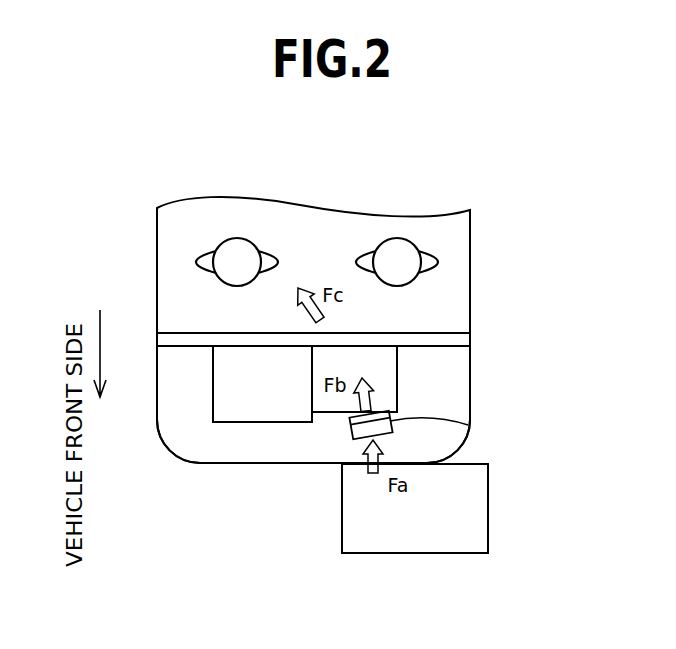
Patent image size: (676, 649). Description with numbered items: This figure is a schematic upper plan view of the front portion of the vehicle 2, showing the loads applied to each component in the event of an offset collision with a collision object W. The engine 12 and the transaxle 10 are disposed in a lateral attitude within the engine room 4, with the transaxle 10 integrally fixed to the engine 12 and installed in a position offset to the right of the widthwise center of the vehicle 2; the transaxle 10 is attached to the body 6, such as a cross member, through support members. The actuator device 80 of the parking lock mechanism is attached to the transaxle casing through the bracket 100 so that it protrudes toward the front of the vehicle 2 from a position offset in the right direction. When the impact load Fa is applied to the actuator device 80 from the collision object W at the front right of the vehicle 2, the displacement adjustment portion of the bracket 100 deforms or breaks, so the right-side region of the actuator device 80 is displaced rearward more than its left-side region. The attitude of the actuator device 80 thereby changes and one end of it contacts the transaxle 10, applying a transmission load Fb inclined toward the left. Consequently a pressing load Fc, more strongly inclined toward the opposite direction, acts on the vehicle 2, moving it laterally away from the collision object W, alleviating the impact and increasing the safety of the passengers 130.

The vehicle 2 is at (495, 211).
The engine room 4 is at (183, 437).
The body 6 is at (468, 303).
The transaxle 10 is at (377, 372).
The engine 12 is at (241, 405).
The actuator device 80 is at (392, 427).
The bracket 100 is at (350, 414).
The passengers 130 is at (230, 250).
The collision object W is at (414, 535).